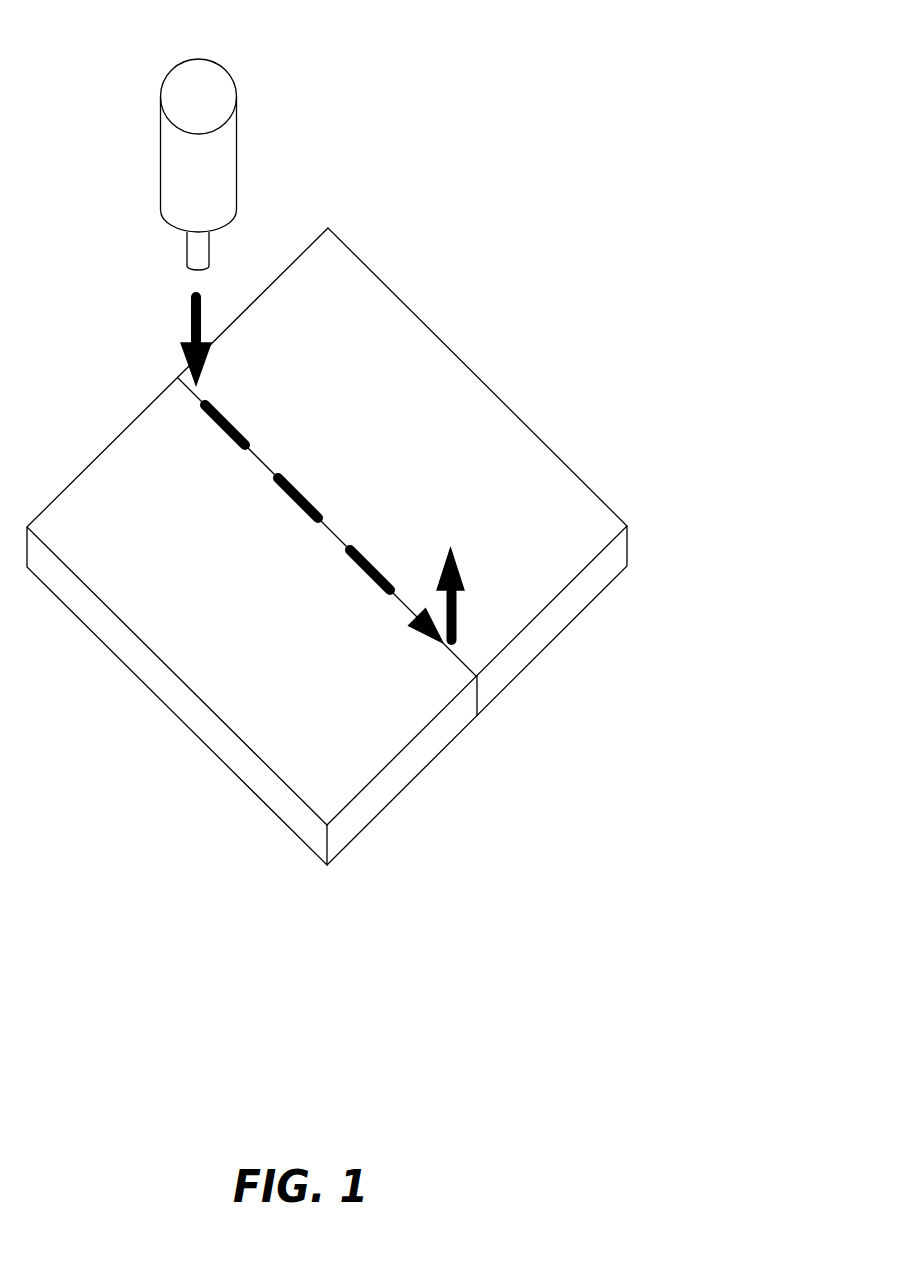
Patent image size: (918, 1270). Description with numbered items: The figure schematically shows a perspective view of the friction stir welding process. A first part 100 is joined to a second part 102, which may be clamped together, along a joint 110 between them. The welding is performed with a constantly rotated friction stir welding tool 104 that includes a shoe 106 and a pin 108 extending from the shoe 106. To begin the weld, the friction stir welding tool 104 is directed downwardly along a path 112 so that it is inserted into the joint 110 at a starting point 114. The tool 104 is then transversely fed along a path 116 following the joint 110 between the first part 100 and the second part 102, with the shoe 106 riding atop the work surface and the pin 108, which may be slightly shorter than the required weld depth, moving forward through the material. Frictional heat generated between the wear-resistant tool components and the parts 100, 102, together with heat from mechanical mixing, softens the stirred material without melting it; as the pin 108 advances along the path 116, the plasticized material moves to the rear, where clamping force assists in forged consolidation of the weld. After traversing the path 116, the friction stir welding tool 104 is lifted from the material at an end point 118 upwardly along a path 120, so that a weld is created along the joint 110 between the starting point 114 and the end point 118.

The first part 100 is at (460, 360).
The second part 102 is at (180, 695).
The friction stir welding tool 104 is at (219, 140).
The shoe 106 is at (202, 160).
The pin 108 is at (187, 257).
The joint 110 is at (477, 695).
The path 112 is at (188, 313).
The starting point 114 is at (194, 395).
The path 116 is at (367, 573).
The end point 118 is at (447, 647).
The path 120 is at (455, 597).